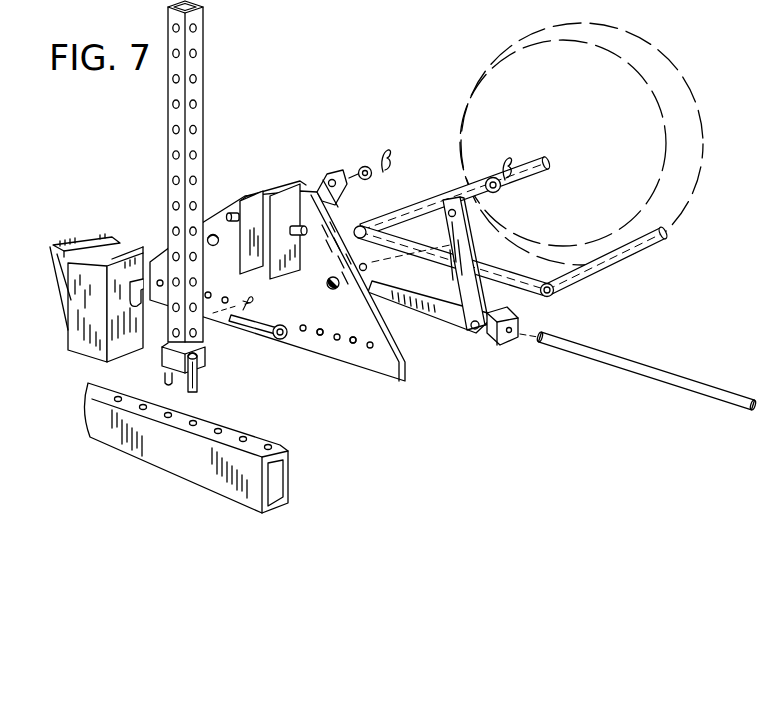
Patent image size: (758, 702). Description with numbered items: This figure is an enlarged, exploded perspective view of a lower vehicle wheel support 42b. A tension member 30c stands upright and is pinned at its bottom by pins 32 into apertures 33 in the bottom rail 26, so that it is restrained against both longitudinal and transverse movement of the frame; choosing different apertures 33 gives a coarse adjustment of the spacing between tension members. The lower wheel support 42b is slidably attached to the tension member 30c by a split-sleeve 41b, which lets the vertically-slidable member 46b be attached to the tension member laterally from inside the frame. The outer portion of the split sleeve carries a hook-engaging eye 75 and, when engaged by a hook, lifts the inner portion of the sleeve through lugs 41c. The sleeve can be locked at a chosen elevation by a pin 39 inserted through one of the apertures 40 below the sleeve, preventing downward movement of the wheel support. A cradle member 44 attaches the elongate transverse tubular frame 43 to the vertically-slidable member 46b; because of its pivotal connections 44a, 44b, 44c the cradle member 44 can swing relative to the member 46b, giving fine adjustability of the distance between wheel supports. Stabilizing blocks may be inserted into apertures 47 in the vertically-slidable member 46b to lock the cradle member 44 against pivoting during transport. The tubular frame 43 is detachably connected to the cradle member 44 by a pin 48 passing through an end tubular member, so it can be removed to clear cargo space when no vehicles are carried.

The bottom rail 26 is at (188, 448).
The tension member 30c is at (197, 65).
The pins 32 is at (172, 380).
The apertures 33 is at (190, 428).
The pin 39 is at (258, 318).
The apertures 40 is at (204, 333).
The split-sleeve 41b is at (248, 190).
The lugs 41c is at (299, 236).
The lower wheel support 42b is at (357, 143).
The tubular frame 43 is at (583, 270).
The cradle member 44 is at (445, 322).
The pivotal connection 44a is at (330, 176).
The pivotal connection 44b is at (466, 210).
The pivotal connection 44c is at (479, 331).
The vertically-slidable member 46b is at (390, 384).
The apertures 47 is at (352, 337).
The pin 48 is at (680, 373).
The hook-engaging eye 75 is at (60, 246).